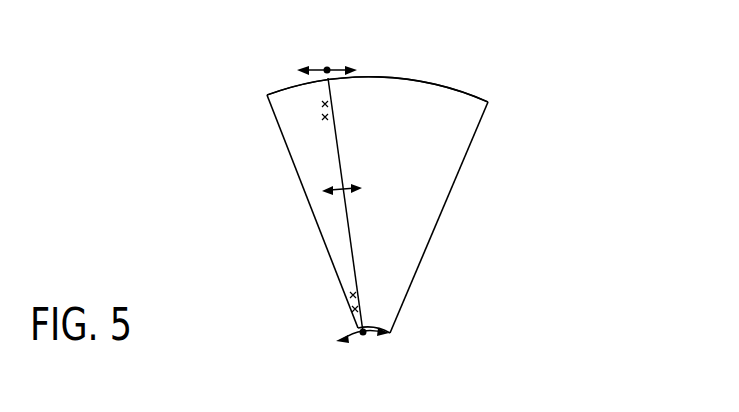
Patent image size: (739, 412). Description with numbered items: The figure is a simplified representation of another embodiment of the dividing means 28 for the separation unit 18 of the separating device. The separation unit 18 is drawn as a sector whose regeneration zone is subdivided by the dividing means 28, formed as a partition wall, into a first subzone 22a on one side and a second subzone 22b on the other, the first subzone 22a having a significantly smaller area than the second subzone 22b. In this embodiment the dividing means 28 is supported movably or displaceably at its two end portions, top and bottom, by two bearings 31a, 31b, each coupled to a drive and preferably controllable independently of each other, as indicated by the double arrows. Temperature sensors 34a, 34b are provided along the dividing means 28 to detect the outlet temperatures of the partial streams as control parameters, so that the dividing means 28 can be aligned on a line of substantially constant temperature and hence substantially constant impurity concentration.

The separation unit 18 is at (548, 165).
The first subzone 22a is at (290, 106).
The second subzone 22b is at (471, 95).
The dividing means 28 is at (346, 224).
The bearing 31a is at (369, 337).
The bearing 31b is at (328, 66).
The temperature sensor 34a is at (336, 305).
The temperature sensor 34b is at (305, 116).